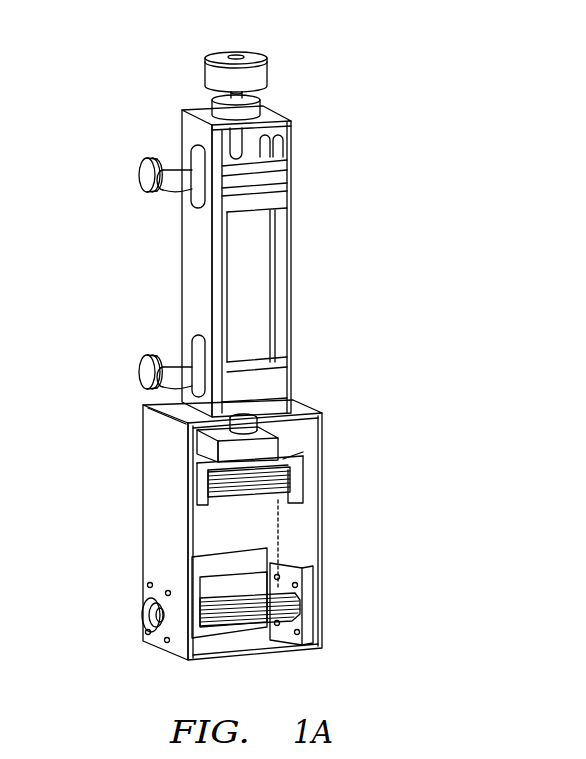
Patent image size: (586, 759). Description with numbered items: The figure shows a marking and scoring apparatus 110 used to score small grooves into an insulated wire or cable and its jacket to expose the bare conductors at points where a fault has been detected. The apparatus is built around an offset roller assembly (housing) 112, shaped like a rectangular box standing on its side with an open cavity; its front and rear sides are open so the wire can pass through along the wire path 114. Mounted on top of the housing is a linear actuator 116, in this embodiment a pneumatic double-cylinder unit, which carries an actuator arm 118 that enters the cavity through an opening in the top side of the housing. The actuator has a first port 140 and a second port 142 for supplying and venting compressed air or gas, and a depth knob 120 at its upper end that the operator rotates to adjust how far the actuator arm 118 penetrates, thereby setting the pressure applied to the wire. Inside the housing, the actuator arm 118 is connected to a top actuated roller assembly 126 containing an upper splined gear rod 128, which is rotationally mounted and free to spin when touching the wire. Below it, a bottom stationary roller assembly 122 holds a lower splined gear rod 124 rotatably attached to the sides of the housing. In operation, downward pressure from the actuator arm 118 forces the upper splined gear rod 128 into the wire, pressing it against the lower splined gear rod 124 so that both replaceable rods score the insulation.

The marking and scoring apparatus 110 is at (383, 87).
The offset roller assembly (housing) 112 is at (148, 518).
The wire path 114 is at (276, 622).
The linear actuator 116 is at (305, 250).
The actuator arm 118 is at (290, 440).
The depth knob 120 is at (190, 68).
The bottom stationary roller assembly 122 is at (133, 613).
The lower splined gear rod 124 is at (243, 585).
The top actuated roller assembly 126 is at (200, 483).
The upper splined gear rod 128 is at (290, 478).
The first port 140 is at (140, 167).
The second port 142 is at (130, 365).